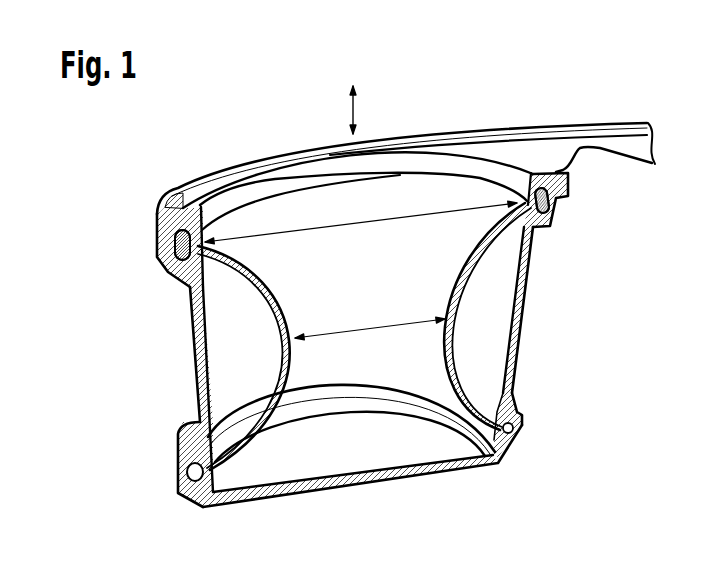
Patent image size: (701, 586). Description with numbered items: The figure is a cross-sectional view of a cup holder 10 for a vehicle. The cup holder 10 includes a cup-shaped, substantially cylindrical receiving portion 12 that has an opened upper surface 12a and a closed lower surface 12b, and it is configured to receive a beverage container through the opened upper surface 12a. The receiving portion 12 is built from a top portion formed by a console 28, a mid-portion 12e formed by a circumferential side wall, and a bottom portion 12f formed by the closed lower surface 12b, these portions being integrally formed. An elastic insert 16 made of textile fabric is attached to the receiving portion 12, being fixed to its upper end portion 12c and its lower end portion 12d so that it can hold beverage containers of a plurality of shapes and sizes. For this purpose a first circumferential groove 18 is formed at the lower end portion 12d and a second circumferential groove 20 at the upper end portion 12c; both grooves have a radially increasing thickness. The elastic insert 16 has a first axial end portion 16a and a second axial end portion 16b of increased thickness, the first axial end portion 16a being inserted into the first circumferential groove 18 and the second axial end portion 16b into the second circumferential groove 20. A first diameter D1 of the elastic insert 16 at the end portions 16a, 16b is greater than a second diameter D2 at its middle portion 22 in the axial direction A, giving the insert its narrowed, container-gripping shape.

The cup holder 10 is at (371, 317).
The cup-shaped receiving portion 12 is at (150, 357).
The opened upper surface 12a is at (402, 170).
The closed lower surface 12b is at (362, 491).
The upper end portion 12c is at (564, 315).
The lower end portion 12d is at (414, 269).
The mid-portion 12e is at (151, 389).
The bottom portion 12f is at (362, 491).
The elastic insert 16 is at (409, 336).
The first axial end portion 16a is at (156, 464).
The second axial end portion 16b is at (139, 239).
The first circumferential groove 18 is at (548, 425).
The second circumferential groove 20 is at (577, 200).
The middle portion 22 is at (526, 316).
The console 28 is at (605, 124).
The first diameter D1 is at (361, 174).
The second diameter D2 is at (370, 428).
The axial direction A is at (374, 110).